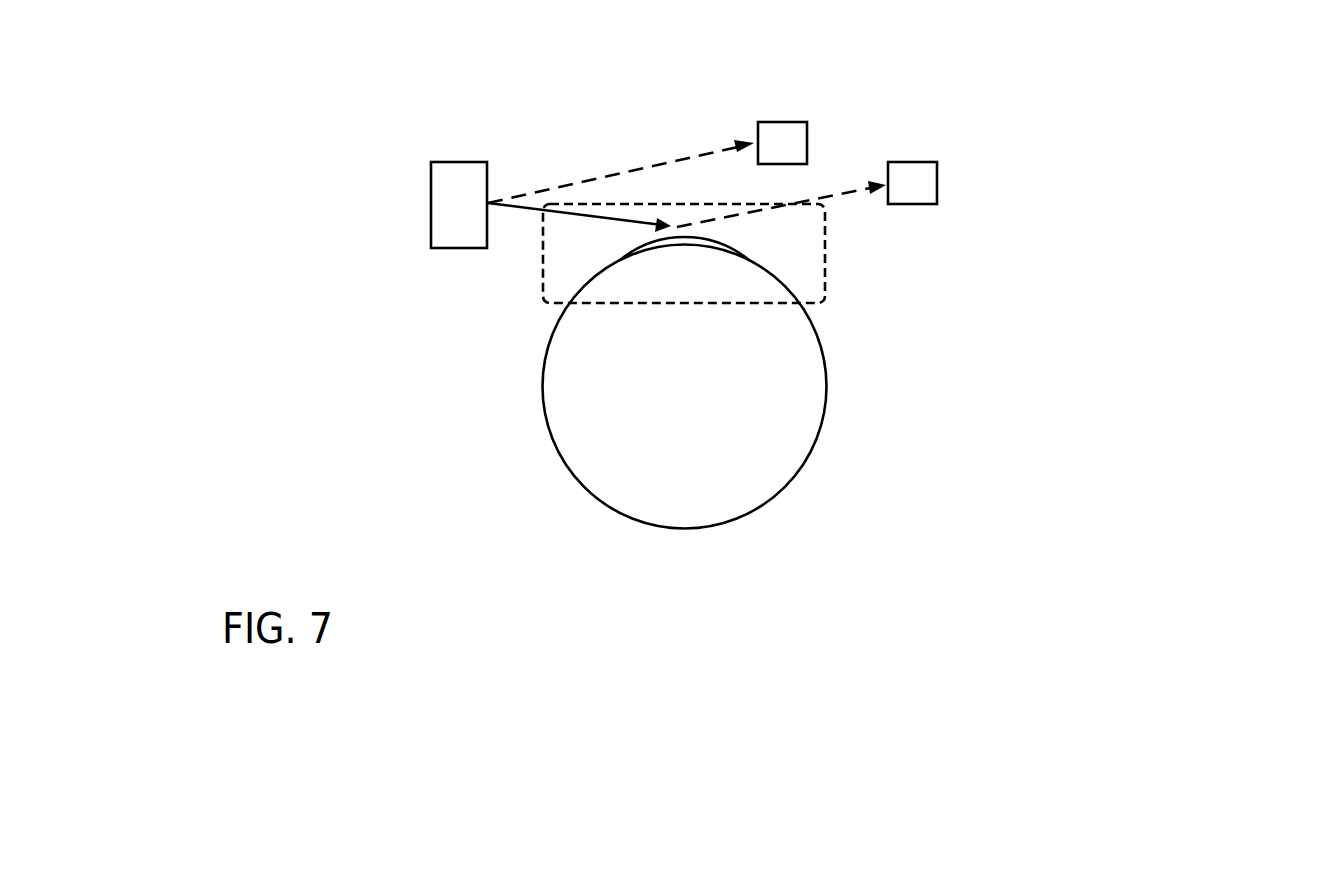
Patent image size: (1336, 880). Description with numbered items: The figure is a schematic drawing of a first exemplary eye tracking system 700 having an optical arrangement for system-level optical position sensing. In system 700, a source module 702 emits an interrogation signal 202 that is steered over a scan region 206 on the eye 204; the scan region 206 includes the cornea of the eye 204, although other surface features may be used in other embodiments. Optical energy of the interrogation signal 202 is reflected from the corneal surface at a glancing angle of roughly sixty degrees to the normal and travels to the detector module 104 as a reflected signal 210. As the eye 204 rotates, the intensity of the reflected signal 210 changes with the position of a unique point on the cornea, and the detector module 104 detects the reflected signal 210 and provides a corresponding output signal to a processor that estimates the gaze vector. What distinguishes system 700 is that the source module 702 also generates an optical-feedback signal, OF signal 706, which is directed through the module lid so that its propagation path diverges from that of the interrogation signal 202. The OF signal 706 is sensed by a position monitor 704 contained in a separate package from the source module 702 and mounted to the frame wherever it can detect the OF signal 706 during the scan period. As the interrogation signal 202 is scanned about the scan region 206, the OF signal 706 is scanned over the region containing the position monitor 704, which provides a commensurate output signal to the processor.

The system 700 is at (345, 72).
The source module 702 is at (460, 205).
The OF signal 706 is at (640, 168).
The position monitor 704 is at (792, 143).
The detector module 104 is at (923, 184).
The interrogation signal 202 is at (535, 210).
The reflected signal 210 is at (840, 195).
The eye 204 is at (737, 398).
The scan region 206 is at (768, 305).